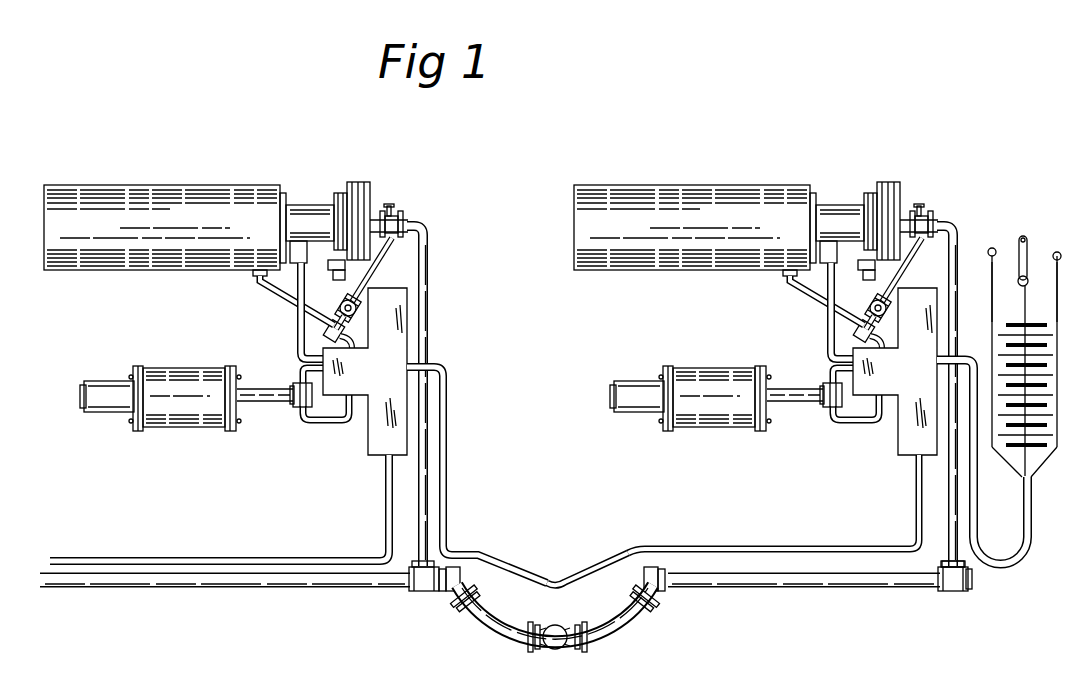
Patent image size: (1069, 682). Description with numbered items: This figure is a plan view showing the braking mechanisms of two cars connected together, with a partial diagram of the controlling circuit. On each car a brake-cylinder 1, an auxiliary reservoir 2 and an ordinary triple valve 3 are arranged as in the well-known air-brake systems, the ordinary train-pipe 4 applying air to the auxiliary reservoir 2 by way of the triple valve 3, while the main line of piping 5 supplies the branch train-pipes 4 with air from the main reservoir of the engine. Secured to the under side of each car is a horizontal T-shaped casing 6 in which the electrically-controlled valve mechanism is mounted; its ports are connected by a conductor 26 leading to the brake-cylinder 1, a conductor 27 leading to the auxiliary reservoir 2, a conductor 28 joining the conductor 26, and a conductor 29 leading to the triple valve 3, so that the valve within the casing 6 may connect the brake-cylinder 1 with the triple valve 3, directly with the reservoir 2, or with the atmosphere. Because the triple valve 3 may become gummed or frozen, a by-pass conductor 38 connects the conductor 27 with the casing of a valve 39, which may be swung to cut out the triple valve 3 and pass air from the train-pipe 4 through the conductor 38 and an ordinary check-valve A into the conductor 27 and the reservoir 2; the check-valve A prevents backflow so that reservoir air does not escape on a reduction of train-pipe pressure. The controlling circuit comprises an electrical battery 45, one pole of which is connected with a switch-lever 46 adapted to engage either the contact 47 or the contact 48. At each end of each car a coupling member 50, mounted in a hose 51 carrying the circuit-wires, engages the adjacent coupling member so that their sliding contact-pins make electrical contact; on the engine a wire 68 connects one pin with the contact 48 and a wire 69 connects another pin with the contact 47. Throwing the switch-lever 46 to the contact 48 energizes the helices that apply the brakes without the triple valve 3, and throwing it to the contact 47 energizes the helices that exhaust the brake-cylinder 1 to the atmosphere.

The brake-cylinder 1 is at (174, 367).
The auxiliary reservoir 2 is at (170, 186).
The triple valve 3 is at (309, 209).
The train-pipe 4 is at (426, 265).
The main line of piping 5 is at (792, 588).
The T-shaped casing 6 is at (630, 371).
The conductor 26 is at (277, 403).
The conductor 27 is at (281, 300).
The conductor 28 is at (569, 390).
The conductor 29 is at (296, 336).
The by-pass conductor 38 is at (369, 266).
The valve 39 is at (391, 216).
The electrical battery 45 is at (1002, 337).
The switch-lever 46 is at (1018, 267).
The contact 47 is at (1028, 283).
The contact 48 is at (991, 248).
The coupling member 50 is at (552, 584).
The hose 51 is at (477, 551).
The wire 68 is at (992, 303).
The wire 69 is at (1057, 311).
The check-valve A is at (338, 299).